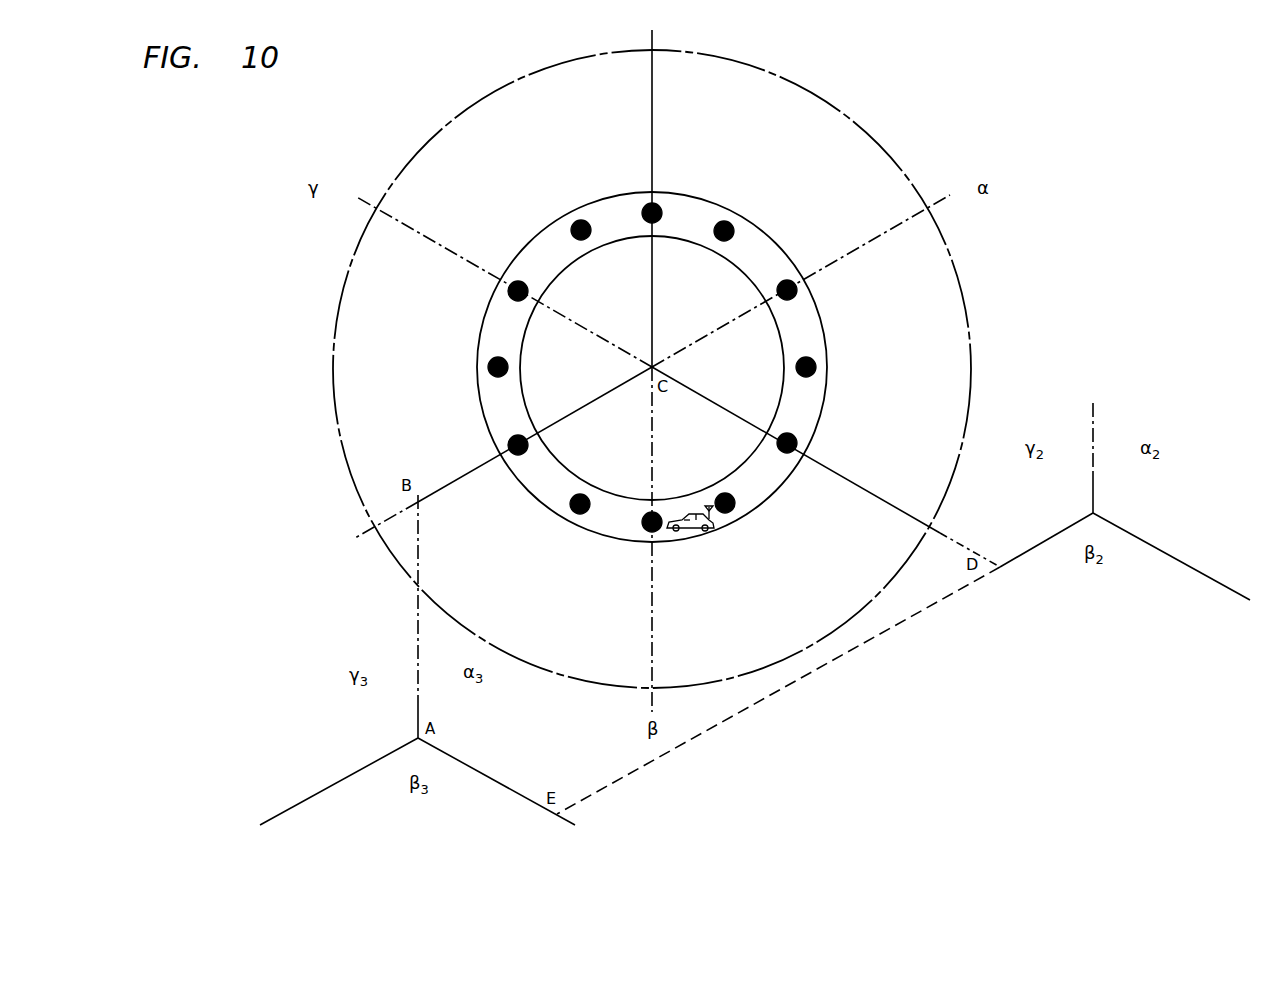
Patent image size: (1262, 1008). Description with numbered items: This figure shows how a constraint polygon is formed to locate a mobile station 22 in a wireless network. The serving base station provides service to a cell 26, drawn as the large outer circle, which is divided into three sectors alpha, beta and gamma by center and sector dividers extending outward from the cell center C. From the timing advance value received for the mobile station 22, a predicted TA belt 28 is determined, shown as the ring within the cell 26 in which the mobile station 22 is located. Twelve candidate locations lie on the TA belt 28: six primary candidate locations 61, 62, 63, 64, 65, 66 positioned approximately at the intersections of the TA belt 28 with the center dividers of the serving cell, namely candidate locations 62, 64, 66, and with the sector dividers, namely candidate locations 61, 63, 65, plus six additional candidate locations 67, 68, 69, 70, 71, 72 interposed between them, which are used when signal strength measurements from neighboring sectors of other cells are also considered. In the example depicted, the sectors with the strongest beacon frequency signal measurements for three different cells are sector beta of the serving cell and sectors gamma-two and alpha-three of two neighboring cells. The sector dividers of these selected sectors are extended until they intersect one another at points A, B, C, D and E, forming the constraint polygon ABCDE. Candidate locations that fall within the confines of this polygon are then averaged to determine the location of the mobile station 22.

The mobile station 22 is at (700, 512).
The cell 26 is at (838, 110).
The TA belt 28 is at (810, 487).
The candidate location 61 is at (657, 205).
The candidate location 62 is at (795, 283).
The candidate location 63 is at (797, 442).
The candidate location 64 is at (645, 529).
The candidate location 65 is at (513, 453).
The candidate location 66 is at (508, 293).
The additional candidate location 67 is at (731, 225).
The additional candidate location 68 is at (816, 367).
The additional candidate location 69 is at (735, 508).
The additional candidate location 70 is at (573, 511).
The additional candidate location 71 is at (488, 367).
The additional candidate location 72 is at (573, 225).